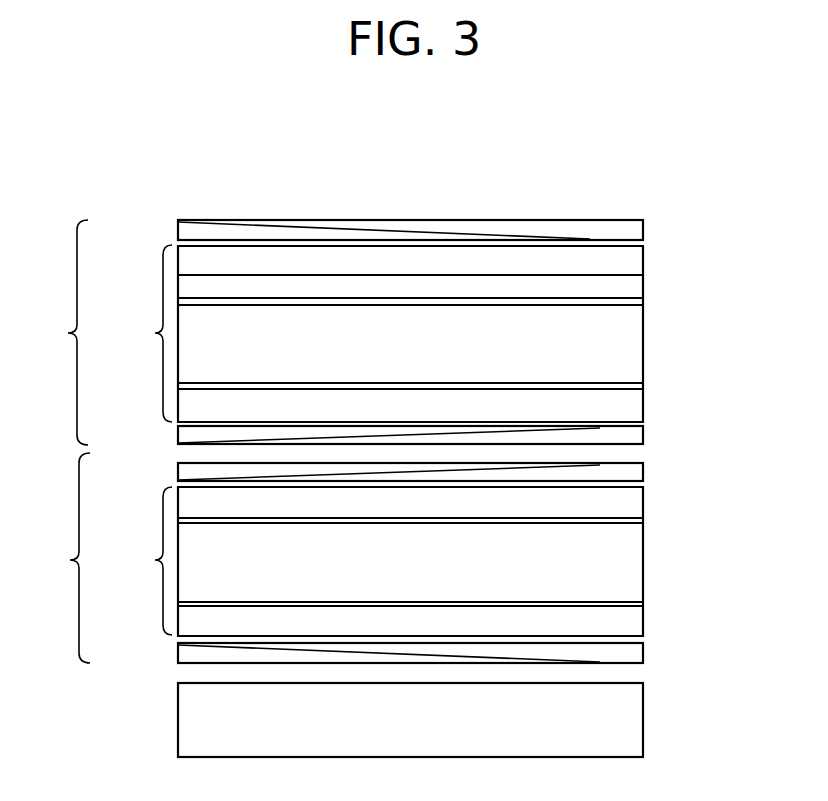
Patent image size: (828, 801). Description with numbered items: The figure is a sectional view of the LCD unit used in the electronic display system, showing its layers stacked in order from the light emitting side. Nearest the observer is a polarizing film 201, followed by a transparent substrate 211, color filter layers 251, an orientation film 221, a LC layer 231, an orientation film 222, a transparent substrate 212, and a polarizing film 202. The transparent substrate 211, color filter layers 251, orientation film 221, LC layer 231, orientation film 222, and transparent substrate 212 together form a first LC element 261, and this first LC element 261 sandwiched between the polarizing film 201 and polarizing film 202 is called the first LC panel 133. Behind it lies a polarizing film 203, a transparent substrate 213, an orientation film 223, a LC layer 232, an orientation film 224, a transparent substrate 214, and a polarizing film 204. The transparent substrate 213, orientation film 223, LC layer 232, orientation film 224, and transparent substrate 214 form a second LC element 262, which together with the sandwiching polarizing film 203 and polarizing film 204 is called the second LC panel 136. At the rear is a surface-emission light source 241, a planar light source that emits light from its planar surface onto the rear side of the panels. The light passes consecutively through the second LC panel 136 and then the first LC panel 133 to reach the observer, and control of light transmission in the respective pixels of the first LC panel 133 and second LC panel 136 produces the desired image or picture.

The first LC panel 133 is at (54, 332).
The second LC panel 136 is at (55, 558).
The first LC element 261 is at (136, 333).
The second LC element 262 is at (136, 561).
The polarizing film 201 is at (633, 232).
The polarizing film 202 is at (633, 435).
The polarizing film 203 is at (633, 473).
The polarizing film 204 is at (633, 652).
The transparent substrate 211 is at (633, 259).
The transparent substrate 212 is at (633, 407).
The transparent substrate 213 is at (633, 502).
The transparent substrate 214 is at (633, 620).
The orientation film 221 is at (640, 302).
The orientation film 222 is at (640, 386).
The orientation film 223 is at (643, 520).
The orientation film 224 is at (643, 604).
The LC layer 231 is at (633, 346).
The LC layer 232 is at (633, 567).
The color filter layers 251 is at (633, 286).
The surface-emission light source 241 is at (633, 717).